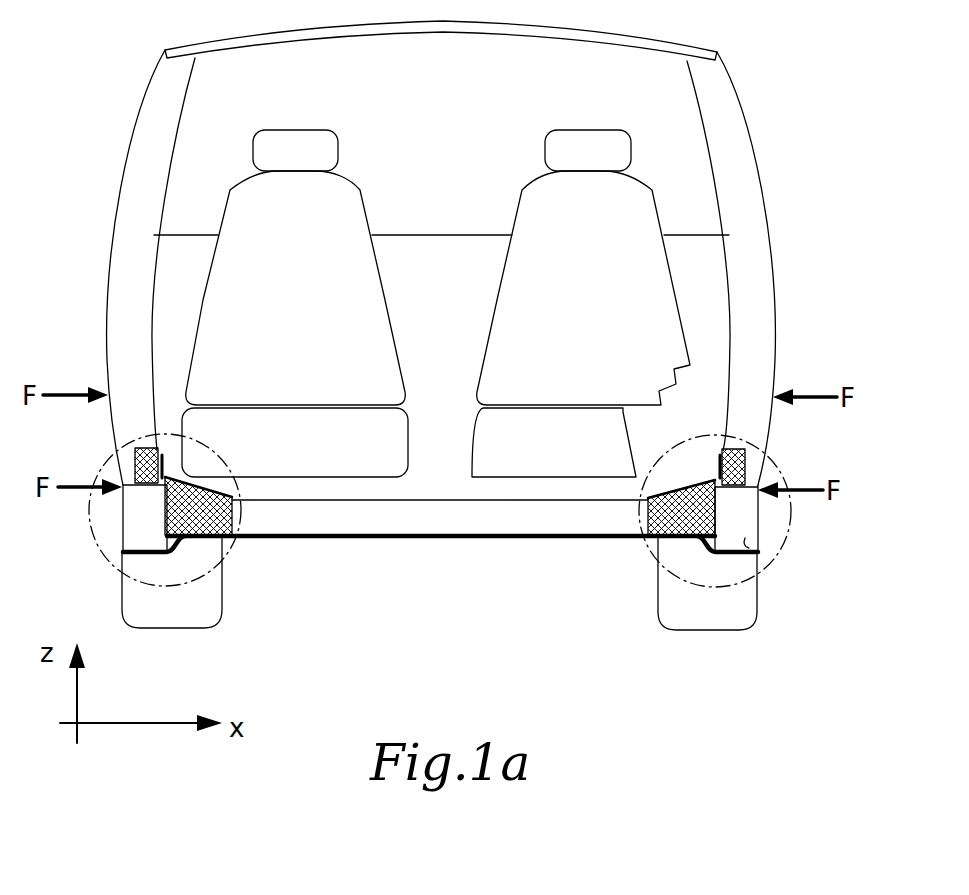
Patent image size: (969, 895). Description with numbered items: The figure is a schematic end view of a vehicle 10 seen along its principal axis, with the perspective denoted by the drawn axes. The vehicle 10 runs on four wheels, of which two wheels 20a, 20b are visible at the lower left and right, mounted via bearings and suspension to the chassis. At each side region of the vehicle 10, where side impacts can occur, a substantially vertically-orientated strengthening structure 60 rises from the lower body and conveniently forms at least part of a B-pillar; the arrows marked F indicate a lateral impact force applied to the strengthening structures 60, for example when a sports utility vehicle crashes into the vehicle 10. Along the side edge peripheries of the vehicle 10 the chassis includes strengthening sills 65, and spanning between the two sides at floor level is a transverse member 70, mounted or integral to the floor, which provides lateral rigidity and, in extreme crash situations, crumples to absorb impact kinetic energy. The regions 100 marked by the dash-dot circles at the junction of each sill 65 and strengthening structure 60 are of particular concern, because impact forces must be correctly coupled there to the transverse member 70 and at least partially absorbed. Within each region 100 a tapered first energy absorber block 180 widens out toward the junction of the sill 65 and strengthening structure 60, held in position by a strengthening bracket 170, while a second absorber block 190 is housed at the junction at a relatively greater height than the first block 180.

The vehicle 10 is at (796, 73).
The wheel 20a is at (207, 603).
The wheel 20b is at (680, 608).
The vertically-orientated strengthening structure 60 is at (125, 333).
The strengthening sill 65 is at (745, 538).
The transverse member 70 is at (427, 522).
The region 100 is at (110, 567).
The strengthening bracket 170 is at (178, 467).
The first energy absorber block 180 is at (225, 553).
The second absorber block 190 is at (137, 460).